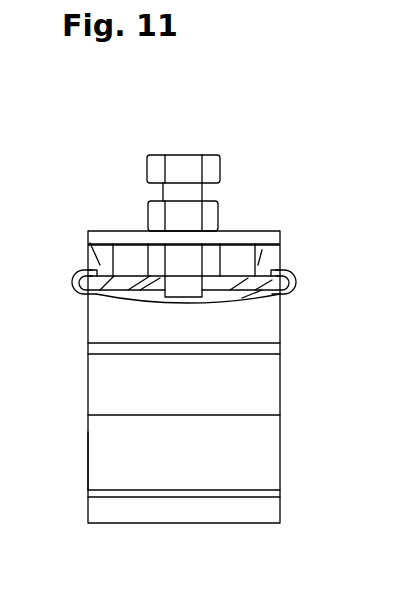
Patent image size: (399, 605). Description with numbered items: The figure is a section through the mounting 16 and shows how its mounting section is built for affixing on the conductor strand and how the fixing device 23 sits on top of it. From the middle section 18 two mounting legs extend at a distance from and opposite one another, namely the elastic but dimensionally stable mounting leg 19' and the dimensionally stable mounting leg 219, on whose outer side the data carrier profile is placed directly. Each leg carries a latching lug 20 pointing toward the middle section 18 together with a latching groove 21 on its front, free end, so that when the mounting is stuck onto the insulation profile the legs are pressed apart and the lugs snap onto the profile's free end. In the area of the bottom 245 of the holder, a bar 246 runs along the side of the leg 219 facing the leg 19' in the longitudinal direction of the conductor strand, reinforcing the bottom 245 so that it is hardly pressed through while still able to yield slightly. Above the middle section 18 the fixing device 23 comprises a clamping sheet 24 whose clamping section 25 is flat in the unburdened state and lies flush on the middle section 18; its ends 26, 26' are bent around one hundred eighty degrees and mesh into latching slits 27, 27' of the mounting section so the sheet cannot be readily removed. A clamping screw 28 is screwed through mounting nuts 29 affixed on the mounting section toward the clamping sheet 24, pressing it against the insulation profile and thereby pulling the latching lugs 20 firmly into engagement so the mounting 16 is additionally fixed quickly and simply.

The mounting 16 is at (219, 104).
The middle section 18 is at (117, 230).
The mounting leg 19' is at (140, 384).
The latching lug 20 is at (88, 490).
The latching groove 21 is at (263, 488).
The fixing device 23 is at (162, 148).
The clamping sheet 24 is at (217, 303).
The clamping section 25 is at (145, 305).
The end of clamping sheet 26 is at (154, 263).
The end of clamping sheet 26' is at (269, 261).
The latching slit 27 is at (71, 225).
The latching slit 27' is at (292, 225).
The clamping screw 28 is at (222, 155).
The mounting nuts 29 is at (214, 246).
The mounting leg 219 is at (88, 432).
The bottom 245 is at (271, 388).
The bar 246 is at (283, 345).